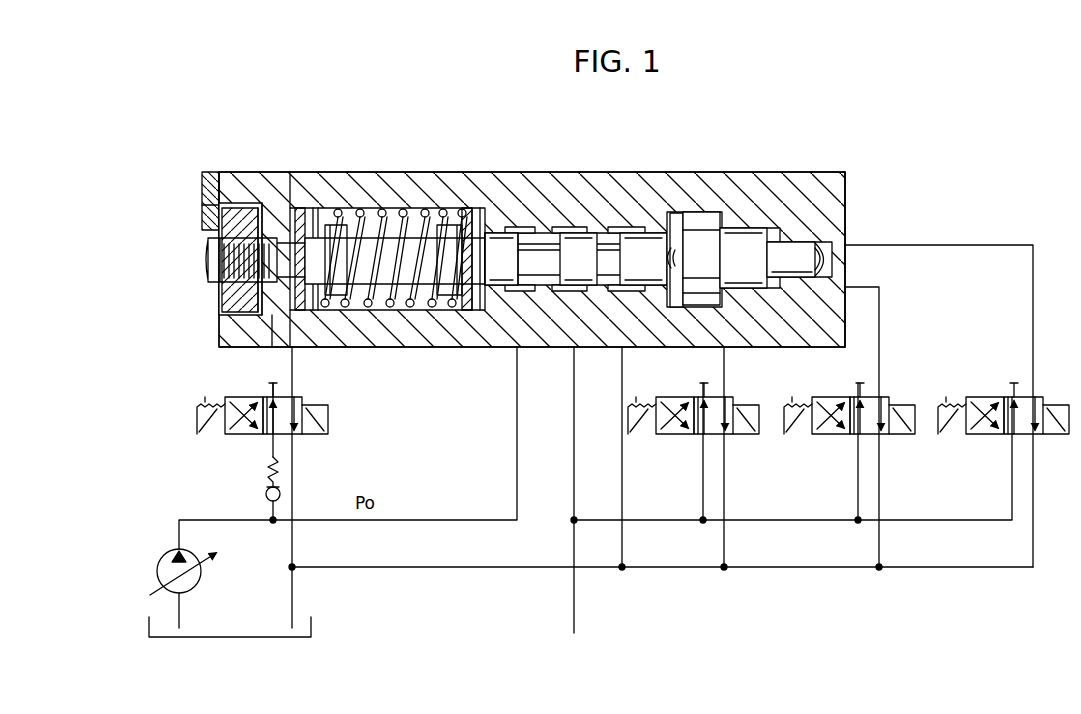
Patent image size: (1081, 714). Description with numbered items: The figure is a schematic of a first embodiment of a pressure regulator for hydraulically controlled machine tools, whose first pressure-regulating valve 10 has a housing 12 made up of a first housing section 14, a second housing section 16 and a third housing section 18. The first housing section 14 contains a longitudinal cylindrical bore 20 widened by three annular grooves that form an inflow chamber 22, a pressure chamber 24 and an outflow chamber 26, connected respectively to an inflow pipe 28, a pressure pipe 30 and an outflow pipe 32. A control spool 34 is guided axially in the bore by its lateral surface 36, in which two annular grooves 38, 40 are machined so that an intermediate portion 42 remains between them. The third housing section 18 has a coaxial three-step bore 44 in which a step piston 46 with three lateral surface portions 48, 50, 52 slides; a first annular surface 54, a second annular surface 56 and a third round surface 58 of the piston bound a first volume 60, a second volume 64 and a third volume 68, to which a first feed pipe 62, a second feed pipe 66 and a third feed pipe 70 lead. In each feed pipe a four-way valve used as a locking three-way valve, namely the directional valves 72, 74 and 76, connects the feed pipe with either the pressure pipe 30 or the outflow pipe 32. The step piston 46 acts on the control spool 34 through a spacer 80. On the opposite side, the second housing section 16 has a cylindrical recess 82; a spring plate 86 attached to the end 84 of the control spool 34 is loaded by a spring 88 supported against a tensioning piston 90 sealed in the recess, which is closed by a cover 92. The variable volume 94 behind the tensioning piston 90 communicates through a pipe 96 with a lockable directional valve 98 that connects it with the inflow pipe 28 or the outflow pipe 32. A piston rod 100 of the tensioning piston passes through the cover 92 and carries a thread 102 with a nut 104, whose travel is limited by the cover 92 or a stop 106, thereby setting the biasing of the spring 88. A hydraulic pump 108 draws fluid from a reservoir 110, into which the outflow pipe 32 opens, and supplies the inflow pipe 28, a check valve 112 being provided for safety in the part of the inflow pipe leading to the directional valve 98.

The first pressure-regulating valve 10 is at (448, 168).
The housing 12 is at (544, 166).
The first housing section 14 is at (504, 170).
The second housing section 16 is at (388, 170).
The third housing section 18 is at (797, 176).
The cylindrical bore 20 is at (549, 240).
The inflow chamber 22 is at (529, 292).
The pressure chamber 24 is at (588, 292).
The outflow chamber 26 is at (636, 236).
The inflow pipe 28 is at (515, 424).
The pressure pipe 30 is at (572, 424).
The outflow pipe 32 is at (621, 424).
The control spool 34 is at (500, 292).
The lateral surface 36 is at (486, 336).
The annular groove 38 is at (531, 240).
The annular groove 40 is at (601, 244).
The intermediate portion 42 is at (578, 236).
The three-step bore 44 is at (746, 210).
The step piston 46 is at (696, 228).
The lateral surface portion 48 is at (710, 232).
The lateral surface portion 50 is at (745, 246).
The lateral surface portion 52 is at (797, 258).
The first annular surface 54 is at (745, 232).
The second annular surface 56 is at (776, 248).
The third round surface 58 is at (824, 262).
The first volume 60 is at (738, 300).
The first feed pipe 62 is at (722, 366).
The second volume 64 is at (776, 300).
The second feed pipe 66 is at (878, 287).
The third volume 68 is at (831, 262).
The third feed pipe 70 is at (927, 245).
The directional valve 72 is at (680, 438).
The directional valve 74 is at (830, 438).
The directional valve 76 is at (982, 393).
The spacer 80 is at (676, 250).
The cylindrical recess 82 is at (415, 212).
The end of the control spool 84 is at (478, 252).
The spring plate 86 is at (394, 258).
The spring 88 is at (357, 220).
The tensioning piston 90 is at (331, 233).
The cover 92 is at (258, 182).
The volume 94 is at (293, 214).
The pipe 96 is at (300, 358).
The directional valve 98 is at (246, 438).
The piston rod 100 is at (206, 258).
The thread 102 is at (232, 214).
The nut 104 is at (212, 182).
The stop 106 is at (203, 206).
The hydraulic pump 108 is at (158, 562).
The reservoir 110 is at (313, 620).
The check valve 112 is at (264, 494).